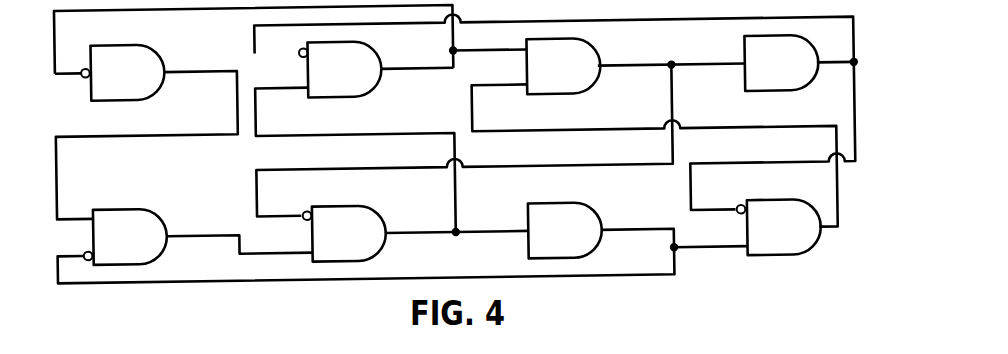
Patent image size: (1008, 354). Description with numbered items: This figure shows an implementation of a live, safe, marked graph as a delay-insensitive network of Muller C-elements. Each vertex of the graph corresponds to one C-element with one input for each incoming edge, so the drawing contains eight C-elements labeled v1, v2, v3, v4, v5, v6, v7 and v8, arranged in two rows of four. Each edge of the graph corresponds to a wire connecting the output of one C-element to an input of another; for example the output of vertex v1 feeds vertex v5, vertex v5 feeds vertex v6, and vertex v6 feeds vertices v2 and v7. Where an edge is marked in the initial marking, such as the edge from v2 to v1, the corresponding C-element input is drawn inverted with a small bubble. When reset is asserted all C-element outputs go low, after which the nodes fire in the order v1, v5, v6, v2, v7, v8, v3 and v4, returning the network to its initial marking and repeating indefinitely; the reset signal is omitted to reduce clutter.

The vertex v1 is at (138, 68).
The vertex v2 is at (355, 65).
The vertex v3 is at (573, 62).
The vertex v4 is at (791, 58).
The vertex v5 is at (141, 232).
The vertex v6 is at (360, 229).
The vertex v7 is at (576, 226).
The vertex v8 is at (794, 222).